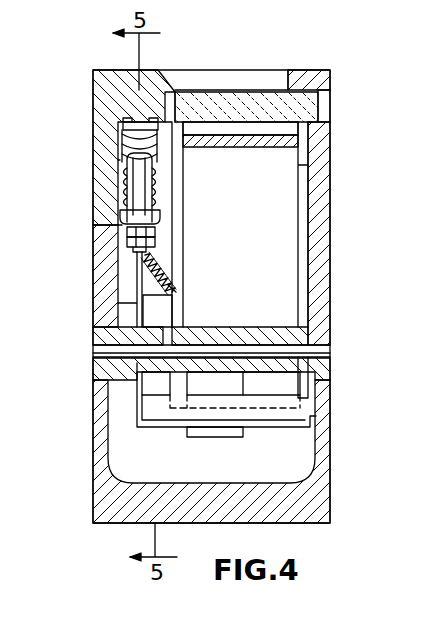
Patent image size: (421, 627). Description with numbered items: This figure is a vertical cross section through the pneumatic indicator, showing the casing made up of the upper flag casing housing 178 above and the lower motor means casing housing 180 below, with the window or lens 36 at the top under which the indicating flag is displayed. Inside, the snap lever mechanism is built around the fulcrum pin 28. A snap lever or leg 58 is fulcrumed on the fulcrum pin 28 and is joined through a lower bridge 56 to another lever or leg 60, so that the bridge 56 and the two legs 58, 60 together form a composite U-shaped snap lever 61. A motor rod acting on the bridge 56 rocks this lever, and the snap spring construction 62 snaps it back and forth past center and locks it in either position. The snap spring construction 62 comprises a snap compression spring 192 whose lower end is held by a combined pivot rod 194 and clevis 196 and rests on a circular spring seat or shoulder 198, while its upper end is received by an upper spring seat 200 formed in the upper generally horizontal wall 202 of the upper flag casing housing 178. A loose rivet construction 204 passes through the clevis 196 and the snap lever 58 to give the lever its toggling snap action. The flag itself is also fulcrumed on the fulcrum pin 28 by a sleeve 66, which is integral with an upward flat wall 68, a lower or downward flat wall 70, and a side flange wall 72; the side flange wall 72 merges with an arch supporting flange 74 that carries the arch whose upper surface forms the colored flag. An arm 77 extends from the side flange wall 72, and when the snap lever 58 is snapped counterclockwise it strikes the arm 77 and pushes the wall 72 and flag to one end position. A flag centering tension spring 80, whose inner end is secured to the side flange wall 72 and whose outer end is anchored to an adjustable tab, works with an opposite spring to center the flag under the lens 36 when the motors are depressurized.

The fulcrum pin 28 is at (316, 350).
The window or lens 36 is at (226, 100).
The bridge 56 is at (158, 410).
The snap lever or leg 58 is at (120, 303).
The lever or leg 60 is at (320, 368).
The composite U-shaped snap lever 61 is at (262, 423).
The snap spring construction 62 is at (120, 183).
The sleeve 66 is at (258, 332).
The upward flat wall 68 is at (283, 243).
The lower or downward flat wall 70 is at (278, 393).
The side flange wall 72 is at (186, 218).
The arch supporting flange 74 is at (186, 193).
The arm 77 is at (166, 259).
The flag centering tension spring 80 is at (173, 278).
The upper flag casing housing 178 is at (322, 82).
The lower motor means casing housing 180 is at (221, 505).
The snap compression spring 192 is at (178, 175).
The pivot rod 194 is at (116, 168).
The clevis 196 is at (126, 243).
The circular spring seat or shoulder 198 is at (126, 230).
The upper spring seat 200 is at (124, 124).
The upper generally horizontal wall 202 is at (95, 88).
The loose rivet construction 204 is at (148, 240).